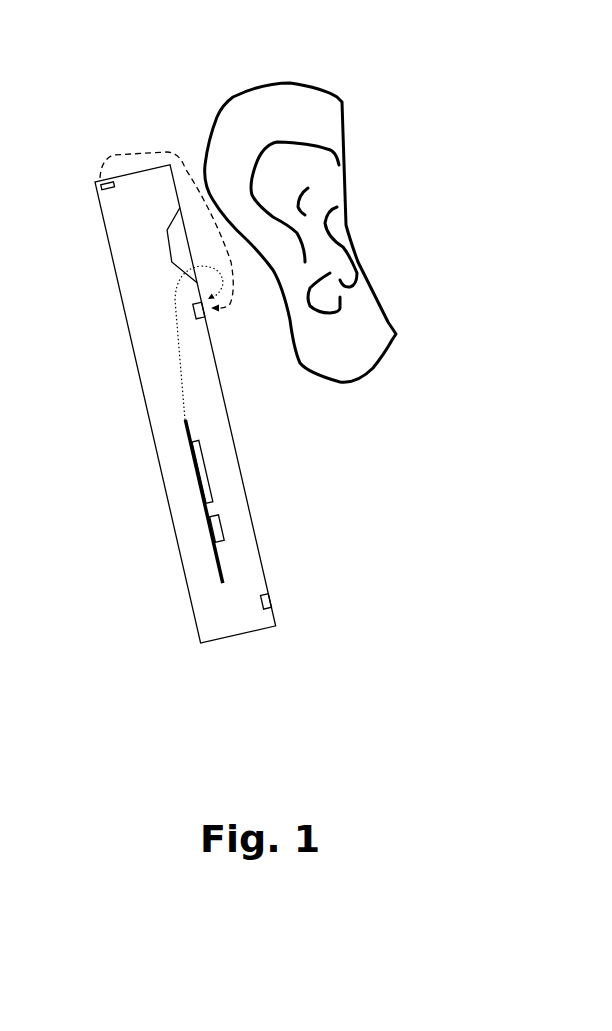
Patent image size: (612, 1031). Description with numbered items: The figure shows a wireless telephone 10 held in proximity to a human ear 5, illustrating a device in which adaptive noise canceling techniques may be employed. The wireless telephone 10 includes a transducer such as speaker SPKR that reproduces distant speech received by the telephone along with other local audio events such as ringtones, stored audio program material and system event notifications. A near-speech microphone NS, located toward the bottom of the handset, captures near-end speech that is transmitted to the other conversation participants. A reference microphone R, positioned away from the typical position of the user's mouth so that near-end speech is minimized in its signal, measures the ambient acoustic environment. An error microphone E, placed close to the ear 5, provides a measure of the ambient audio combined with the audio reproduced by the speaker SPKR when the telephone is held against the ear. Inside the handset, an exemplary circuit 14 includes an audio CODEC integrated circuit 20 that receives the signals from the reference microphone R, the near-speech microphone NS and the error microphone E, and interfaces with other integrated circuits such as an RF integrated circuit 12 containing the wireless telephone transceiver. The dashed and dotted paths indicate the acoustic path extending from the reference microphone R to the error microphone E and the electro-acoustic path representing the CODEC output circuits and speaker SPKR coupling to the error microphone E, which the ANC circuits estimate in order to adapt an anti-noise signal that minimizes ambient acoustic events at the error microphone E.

The human ear 5 is at (290, 85).
The wireless telephone 10 is at (182, 558).
The RF integrated circuit 12 is at (224, 523).
The circuit 14 is at (223, 582).
The audio CODEC integrated circuit 20 is at (196, 460).
The reference microphone R is at (103, 192).
The speaker SPKR is at (173, 218).
The error microphone E is at (194, 319).
The near-speech microphone NS is at (271, 597).